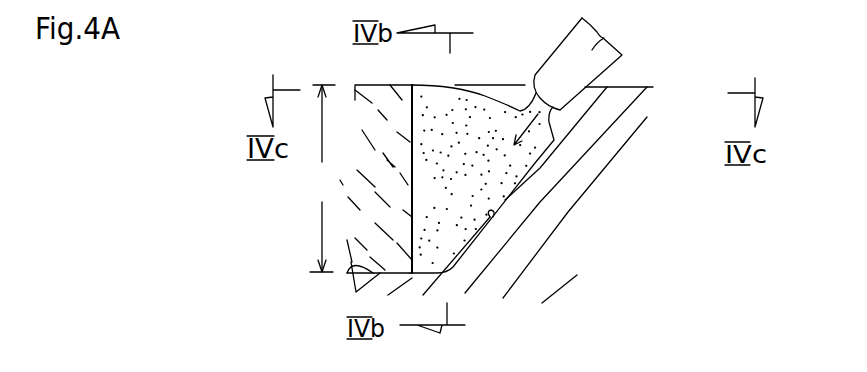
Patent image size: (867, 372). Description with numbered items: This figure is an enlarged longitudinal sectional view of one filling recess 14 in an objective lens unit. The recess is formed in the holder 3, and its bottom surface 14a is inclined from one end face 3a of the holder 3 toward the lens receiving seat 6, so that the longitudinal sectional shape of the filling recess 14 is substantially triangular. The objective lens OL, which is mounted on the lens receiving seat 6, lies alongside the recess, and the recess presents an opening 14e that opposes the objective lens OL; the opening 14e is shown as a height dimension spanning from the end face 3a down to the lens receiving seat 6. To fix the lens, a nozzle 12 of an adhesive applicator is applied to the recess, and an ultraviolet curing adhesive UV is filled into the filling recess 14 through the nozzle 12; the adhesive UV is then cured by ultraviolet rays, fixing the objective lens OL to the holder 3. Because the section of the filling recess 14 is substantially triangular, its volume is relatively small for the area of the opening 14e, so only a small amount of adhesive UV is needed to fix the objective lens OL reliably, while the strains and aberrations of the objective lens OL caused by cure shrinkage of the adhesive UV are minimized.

The holder 3 is at (572, 191).
The end face of holder 3a is at (626, 87).
The lens receiving seat 6 is at (345, 272).
The nozzle 12 is at (603, 38).
The filling recess 14 is at (511, 72).
The bottom surface of filling recess 14a is at (490, 216).
The opening of filling recess 14e is at (321, 178).
The objective lens OL is at (382, 92).
The ultraviolet curing adhesive UV is at (432, 213).